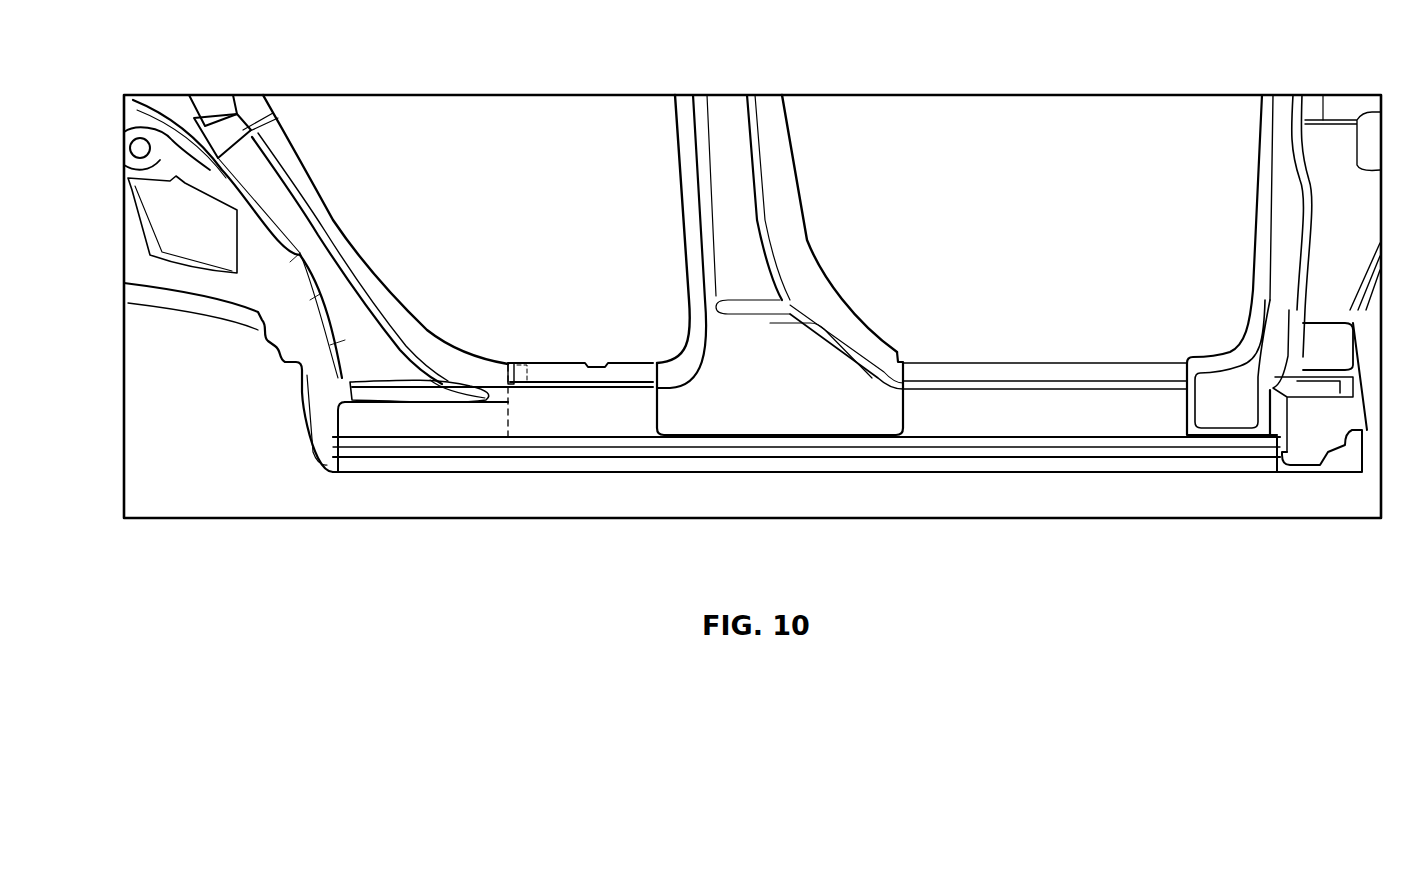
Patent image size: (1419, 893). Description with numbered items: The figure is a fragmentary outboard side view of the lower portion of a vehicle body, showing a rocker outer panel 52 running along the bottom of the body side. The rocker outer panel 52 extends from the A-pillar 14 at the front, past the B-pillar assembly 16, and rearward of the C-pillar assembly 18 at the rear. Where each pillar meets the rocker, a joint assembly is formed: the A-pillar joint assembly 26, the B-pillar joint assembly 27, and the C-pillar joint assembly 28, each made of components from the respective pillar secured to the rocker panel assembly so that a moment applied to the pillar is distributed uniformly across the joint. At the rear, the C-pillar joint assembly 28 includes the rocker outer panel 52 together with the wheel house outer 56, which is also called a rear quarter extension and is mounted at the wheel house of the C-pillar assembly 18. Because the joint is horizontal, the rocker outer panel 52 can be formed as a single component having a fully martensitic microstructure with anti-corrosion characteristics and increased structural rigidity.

The A-pillar assembly 14 is at (1330, 96).
The B-pillar assembly 16 is at (735, 96).
The C-pillar assembly 18 is at (186, 98).
The A-pillar joint assembly 26 is at (1221, 335).
The B-pillar joint assembly 27 is at (877, 329).
The C-pillar joint assembly 28 is at (440, 319).
The rocker outer panel 52 is at (945, 488).
The wheel house outer 56 is at (334, 200).